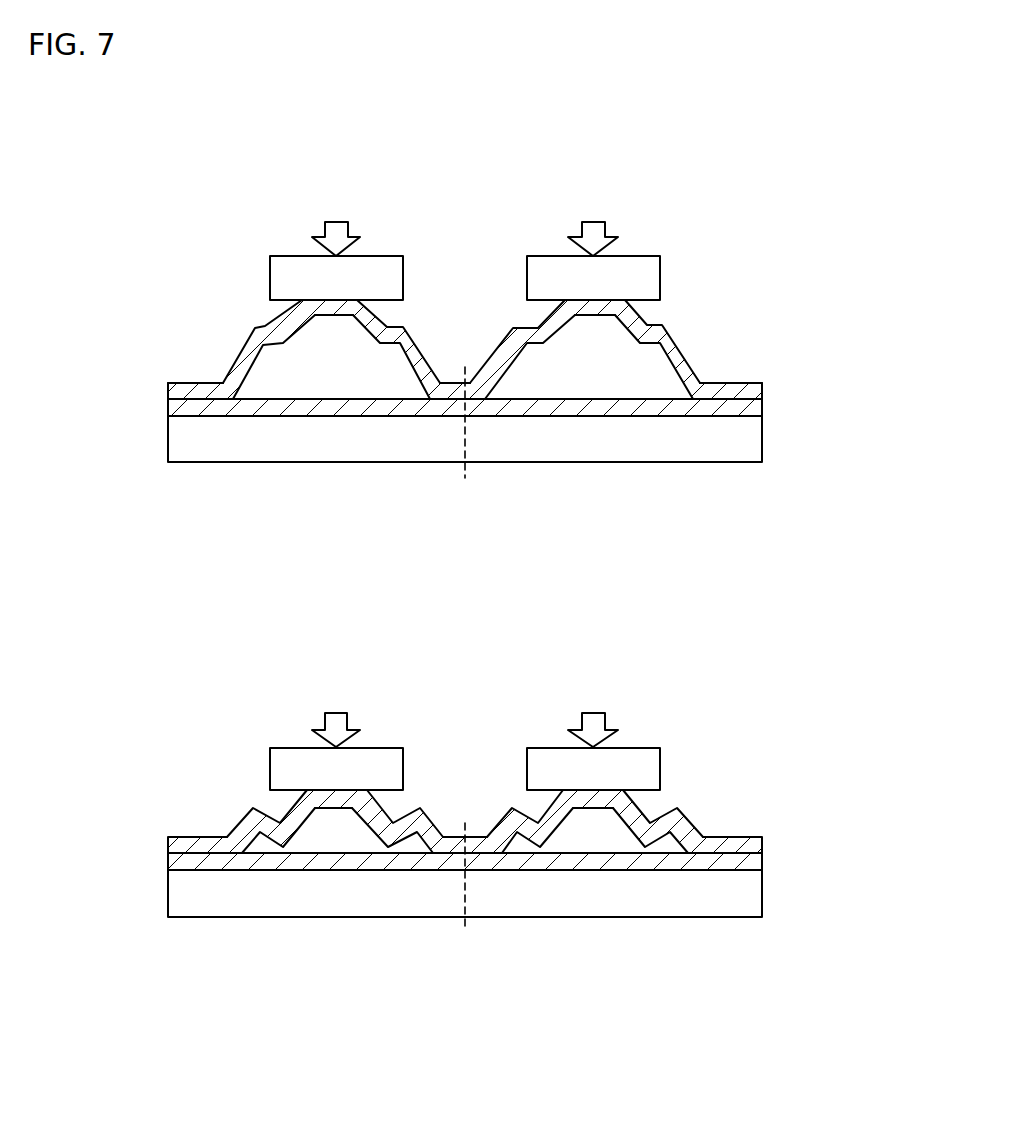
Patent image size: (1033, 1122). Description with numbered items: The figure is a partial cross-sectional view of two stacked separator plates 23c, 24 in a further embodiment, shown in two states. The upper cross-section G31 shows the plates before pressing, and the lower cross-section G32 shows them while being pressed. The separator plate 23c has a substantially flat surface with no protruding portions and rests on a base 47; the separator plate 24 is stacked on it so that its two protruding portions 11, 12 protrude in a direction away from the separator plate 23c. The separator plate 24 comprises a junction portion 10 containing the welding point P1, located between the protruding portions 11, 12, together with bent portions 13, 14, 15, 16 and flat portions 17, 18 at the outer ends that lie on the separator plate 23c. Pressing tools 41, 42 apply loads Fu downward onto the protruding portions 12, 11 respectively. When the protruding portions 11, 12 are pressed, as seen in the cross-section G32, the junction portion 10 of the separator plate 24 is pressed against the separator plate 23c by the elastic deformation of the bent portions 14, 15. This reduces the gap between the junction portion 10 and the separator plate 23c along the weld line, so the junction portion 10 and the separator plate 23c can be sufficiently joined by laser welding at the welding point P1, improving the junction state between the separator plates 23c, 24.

The junction portion 10 is at (478, 383).
The protruding portion 11 is at (585, 300).
The protruding portion 12 is at (330, 298).
The bent portion 13 is at (256, 326).
The bent portion 14 is at (405, 326).
The bent portion 15 is at (538, 327).
The bent portion 16 is at (660, 300).
The flat portion 17 is at (190, 383).
The flat portion 18 is at (738, 383).
The separator plate 23c is at (147, 418).
The separator plate 24 is at (147, 395).
The pressing tool 41 is at (635, 256).
The pressing tool 42 is at (371, 256).
The base 47 is at (762, 445).
The welding point P1 is at (466, 440).
The load Fu is at (465, 221).
The cross-sections before pressing G31 is at (745, 186).
The cross-sections when pressed G32 is at (745, 639).